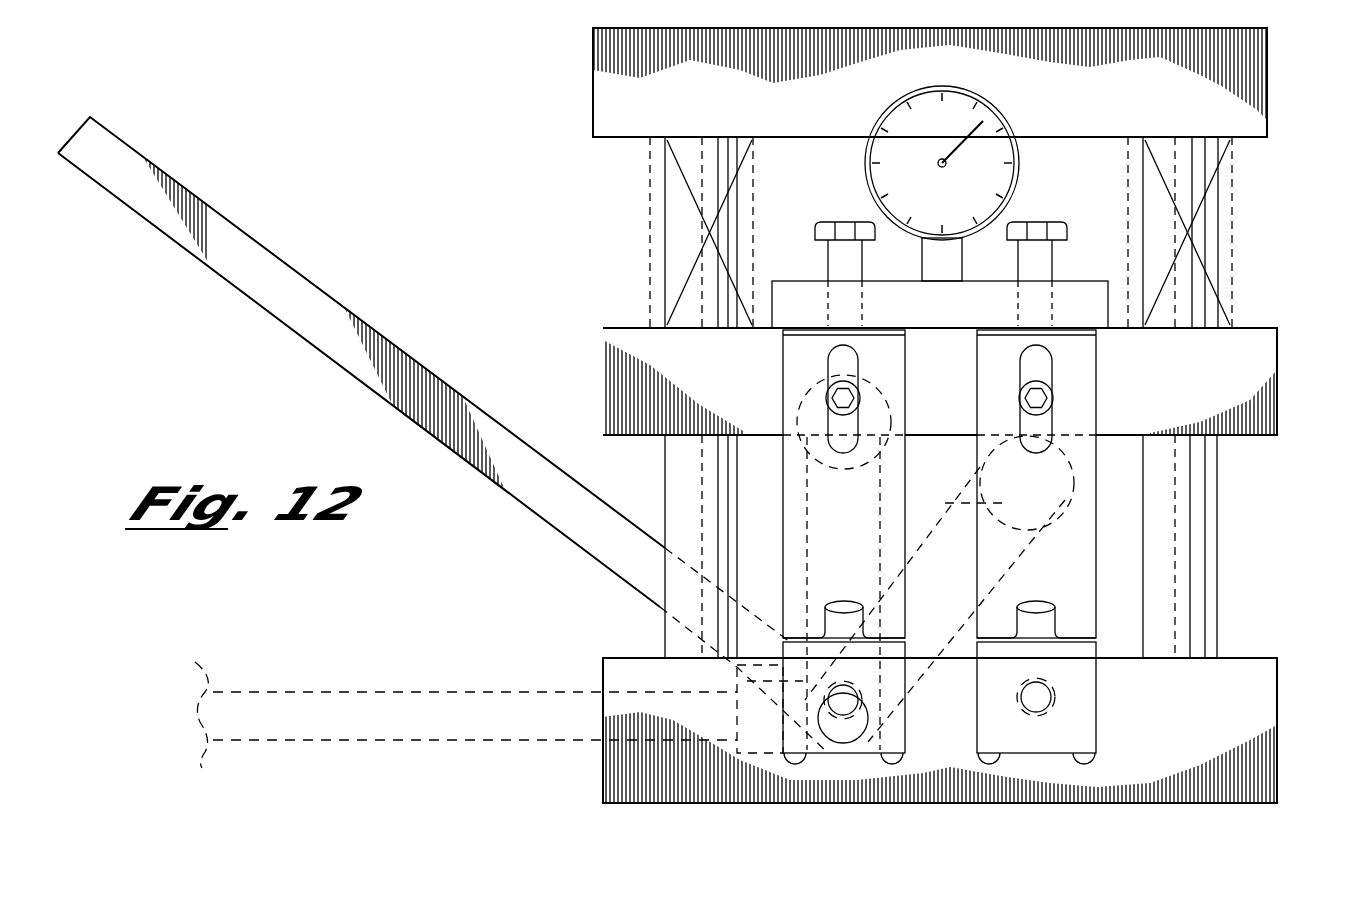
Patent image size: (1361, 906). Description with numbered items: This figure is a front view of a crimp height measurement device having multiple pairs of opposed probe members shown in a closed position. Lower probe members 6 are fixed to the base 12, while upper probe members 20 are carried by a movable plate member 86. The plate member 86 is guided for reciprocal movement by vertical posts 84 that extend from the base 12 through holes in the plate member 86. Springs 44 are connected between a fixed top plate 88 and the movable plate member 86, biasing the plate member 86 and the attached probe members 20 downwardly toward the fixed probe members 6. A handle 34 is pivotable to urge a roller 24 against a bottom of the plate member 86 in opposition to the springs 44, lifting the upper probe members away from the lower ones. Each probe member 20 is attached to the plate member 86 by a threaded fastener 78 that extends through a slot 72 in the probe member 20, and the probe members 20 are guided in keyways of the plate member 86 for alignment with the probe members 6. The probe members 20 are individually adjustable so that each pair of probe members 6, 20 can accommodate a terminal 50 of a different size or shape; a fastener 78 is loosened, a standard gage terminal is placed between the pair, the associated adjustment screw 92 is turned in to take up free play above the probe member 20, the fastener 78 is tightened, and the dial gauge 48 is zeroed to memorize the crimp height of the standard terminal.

The probe members 6 is at (797, 740).
The base 12 is at (625, 777).
The probe members 20 is at (783, 507).
The roller 24 is at (960, 503).
The handle 34 is at (243, 232).
The springs 44 is at (648, 237).
The dial gauge 48 is at (1002, 163).
The terminal 50 is at (1020, 607).
The slots 72 is at (828, 360).
The threaded fasteners 78 is at (830, 388).
The posts 84 is at (665, 633).
The plate member 86 is at (1240, 360).
The top plate 88 is at (1222, 90).
The adjustment screw 92 is at (833, 262).